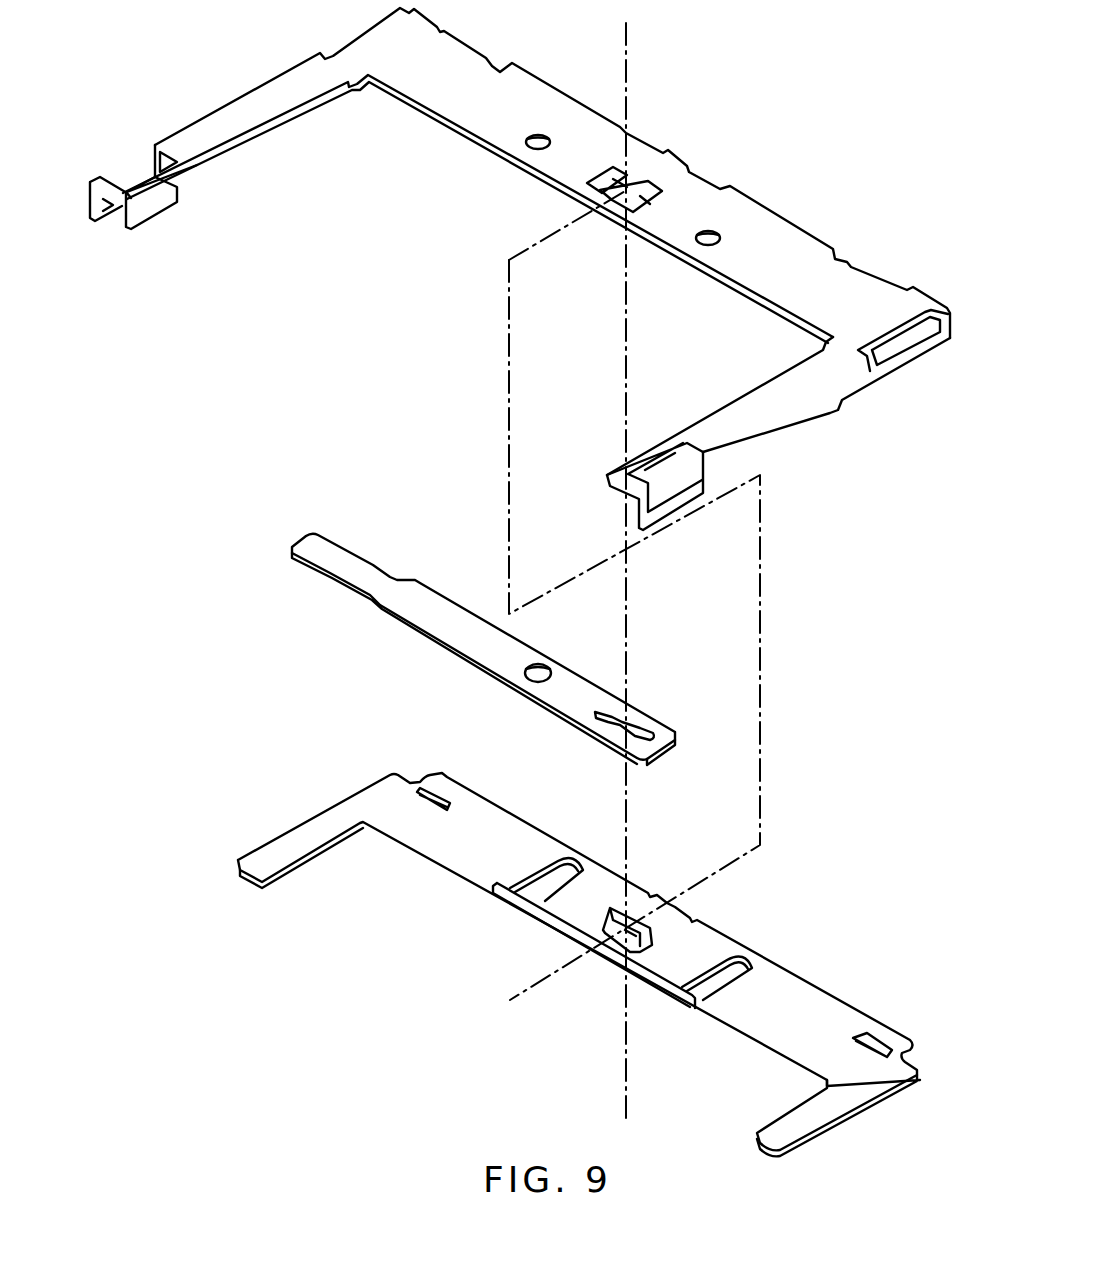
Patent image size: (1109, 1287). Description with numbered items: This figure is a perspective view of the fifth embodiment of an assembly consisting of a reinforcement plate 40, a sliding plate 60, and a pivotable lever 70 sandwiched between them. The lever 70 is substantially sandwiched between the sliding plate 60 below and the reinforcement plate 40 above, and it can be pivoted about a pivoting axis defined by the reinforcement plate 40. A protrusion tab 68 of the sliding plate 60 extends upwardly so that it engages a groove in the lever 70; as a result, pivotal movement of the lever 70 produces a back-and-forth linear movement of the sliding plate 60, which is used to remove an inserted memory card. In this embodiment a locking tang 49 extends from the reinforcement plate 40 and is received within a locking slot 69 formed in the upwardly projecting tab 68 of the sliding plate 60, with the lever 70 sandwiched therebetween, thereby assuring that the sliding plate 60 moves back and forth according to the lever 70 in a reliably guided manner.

The reinforcement plate 40 is at (787, 213).
The locking tang 49 is at (647, 208).
The pivotable lever 70 is at (450, 653).
The sliding plate 60 is at (820, 980).
The locking slot 69 is at (597, 938).
The protrusion tab 68 is at (652, 933).